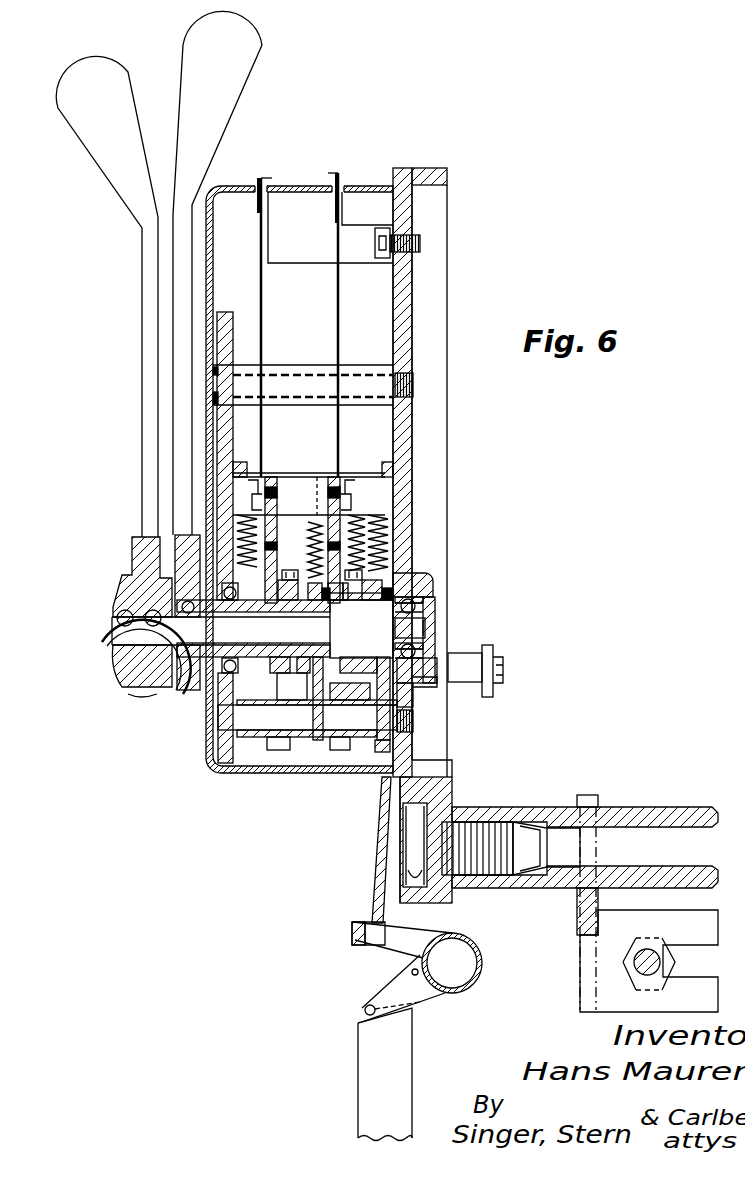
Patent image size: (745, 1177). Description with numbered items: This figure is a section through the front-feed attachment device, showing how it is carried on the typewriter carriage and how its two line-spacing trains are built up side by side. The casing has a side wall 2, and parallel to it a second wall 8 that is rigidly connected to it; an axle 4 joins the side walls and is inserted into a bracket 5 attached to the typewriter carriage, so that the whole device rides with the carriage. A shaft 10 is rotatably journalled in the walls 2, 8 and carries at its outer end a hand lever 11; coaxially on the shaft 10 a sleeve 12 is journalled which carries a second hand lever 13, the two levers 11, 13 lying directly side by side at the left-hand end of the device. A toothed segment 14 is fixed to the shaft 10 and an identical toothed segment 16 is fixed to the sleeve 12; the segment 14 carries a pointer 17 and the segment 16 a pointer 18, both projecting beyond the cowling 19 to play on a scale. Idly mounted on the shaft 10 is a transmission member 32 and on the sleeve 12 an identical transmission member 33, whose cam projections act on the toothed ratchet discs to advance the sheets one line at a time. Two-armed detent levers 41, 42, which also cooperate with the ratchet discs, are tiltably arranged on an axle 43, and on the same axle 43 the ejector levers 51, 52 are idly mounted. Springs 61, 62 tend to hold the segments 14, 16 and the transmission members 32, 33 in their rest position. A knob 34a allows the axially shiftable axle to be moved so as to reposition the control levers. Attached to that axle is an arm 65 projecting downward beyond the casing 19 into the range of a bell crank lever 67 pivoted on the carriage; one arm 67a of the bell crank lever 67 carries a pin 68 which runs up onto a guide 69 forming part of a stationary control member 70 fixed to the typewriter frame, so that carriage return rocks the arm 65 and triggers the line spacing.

The side wall 2 is at (418, 177).
The axle 4 is at (657, 807).
The bracket 5 is at (577, 912).
The second wall 8 is at (233, 328).
The shaft 10 is at (408, 627).
The hand lever 11 is at (107, 70).
The sleeve 12 is at (190, 676).
The hand lever 13 is at (242, 65).
The toothed segment 14 is at (334, 476).
The toothed segment 16 is at (273, 476).
The pointer 17 is at (340, 173).
The pointer 18 is at (270, 177).
The cowling 19 is at (212, 243).
The transmission member 32 is at (388, 583).
The transmission member 33 is at (310, 578).
The knob 34a is at (112, 702).
The detent lever 41 is at (380, 740).
The detent lever 42 is at (317, 740).
The axle 43 is at (303, 722).
The ejector lever 51 is at (395, 697).
The ejector lever 52 is at (322, 698).
The spring 61 is at (237, 530).
The spring 62 is at (343, 513).
The arm 65 is at (378, 835).
The bell crank lever 67 is at (428, 938).
The arm of bell crank lever 67a is at (385, 987).
The pin 68 is at (364, 1010).
The guide 69 is at (410, 1008).
The stationary control member 70 is at (398, 1112).